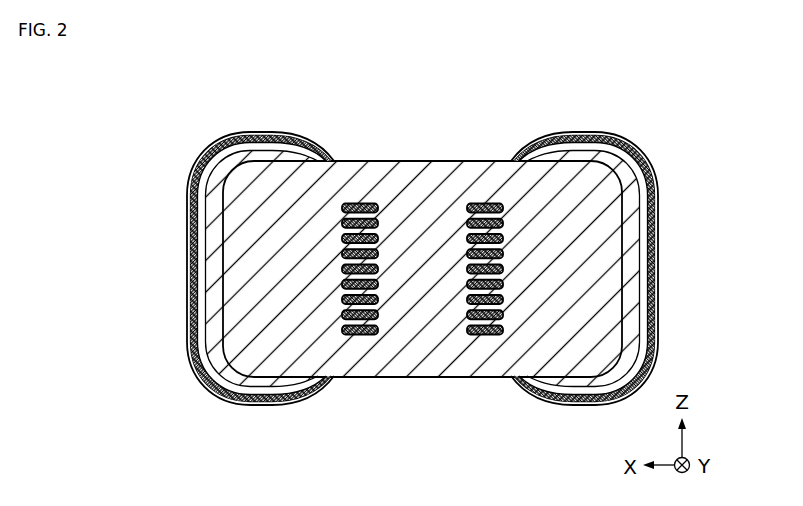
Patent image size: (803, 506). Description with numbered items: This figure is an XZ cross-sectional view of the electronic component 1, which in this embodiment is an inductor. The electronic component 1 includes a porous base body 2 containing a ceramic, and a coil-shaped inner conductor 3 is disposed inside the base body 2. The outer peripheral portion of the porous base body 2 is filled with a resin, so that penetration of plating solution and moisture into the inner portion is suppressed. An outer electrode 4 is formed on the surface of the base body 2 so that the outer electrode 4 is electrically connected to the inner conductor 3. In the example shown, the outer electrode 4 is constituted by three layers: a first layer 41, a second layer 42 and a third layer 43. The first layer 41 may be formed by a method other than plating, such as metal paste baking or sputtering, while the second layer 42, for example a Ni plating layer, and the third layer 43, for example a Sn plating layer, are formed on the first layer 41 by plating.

The electronic component 1 is at (422, 258).
The base body 2 is at (428, 161).
The inner conductor 3 is at (362, 333).
The outer electrode 4 is at (422, 268).
The first layer 41 is at (203, 197).
The second layer 42 is at (197, 227).
The third layer 43 is at (189, 256).